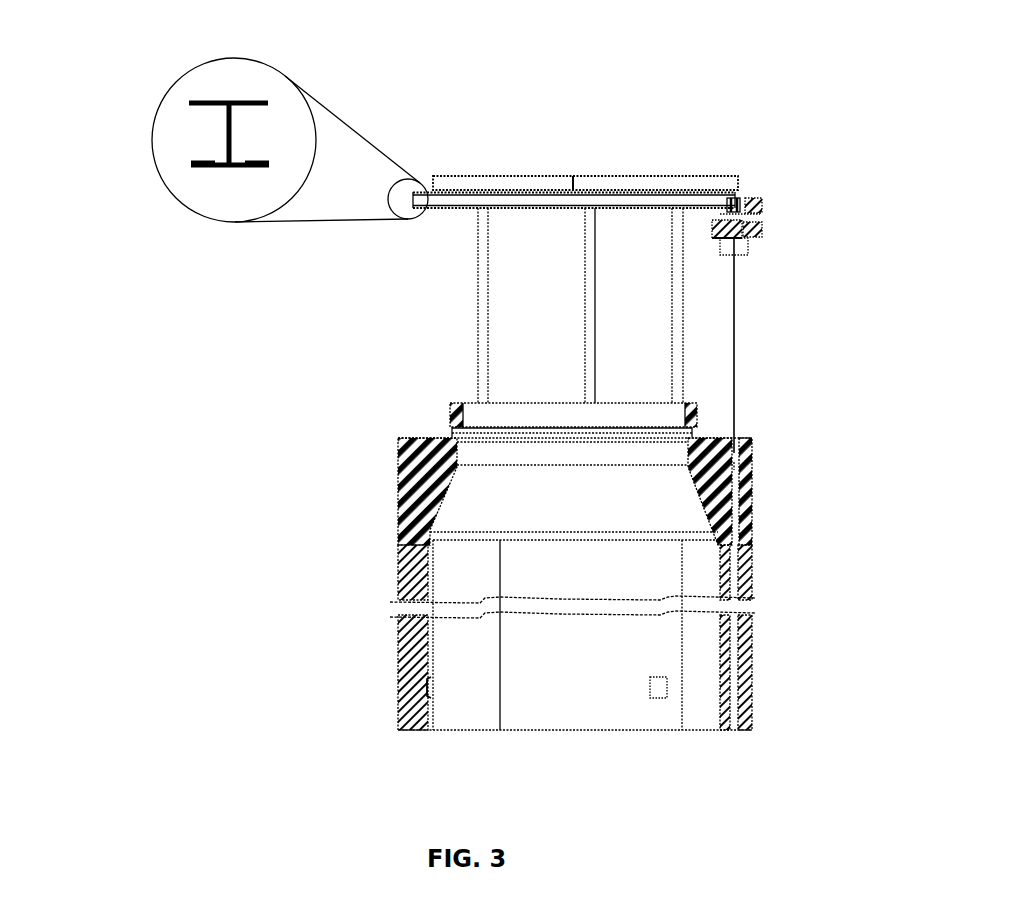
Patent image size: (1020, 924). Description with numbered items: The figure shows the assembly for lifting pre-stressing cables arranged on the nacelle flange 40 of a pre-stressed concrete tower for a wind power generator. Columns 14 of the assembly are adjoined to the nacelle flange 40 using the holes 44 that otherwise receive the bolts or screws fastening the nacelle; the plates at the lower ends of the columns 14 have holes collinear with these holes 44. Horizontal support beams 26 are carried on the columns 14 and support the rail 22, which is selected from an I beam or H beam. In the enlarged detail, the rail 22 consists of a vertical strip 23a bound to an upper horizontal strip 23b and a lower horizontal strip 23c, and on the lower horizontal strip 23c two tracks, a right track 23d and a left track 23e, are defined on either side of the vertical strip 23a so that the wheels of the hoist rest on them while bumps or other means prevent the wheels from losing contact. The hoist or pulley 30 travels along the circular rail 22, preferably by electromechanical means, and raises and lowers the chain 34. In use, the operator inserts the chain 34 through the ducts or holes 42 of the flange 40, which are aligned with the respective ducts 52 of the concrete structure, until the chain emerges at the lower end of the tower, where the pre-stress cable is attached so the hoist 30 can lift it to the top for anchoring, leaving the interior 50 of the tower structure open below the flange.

The columns 14 is at (487, 253).
The rail 22 is at (457, 198).
The vertical strip 23a is at (225, 133).
The upper horizontal strip 23b is at (208, 102).
The lower horizontal strip 23c is at (246, 168).
The right track 23d is at (207, 163).
The left track 23e is at (253, 162).
The horizontal support beams 26 is at (470, 183).
The hoist/pulley 30 is at (757, 198).
The chain 34 is at (735, 302).
The nacelle flange 40 is at (750, 452).
The ducts/holes for pre-stress cable 42 is at (735, 520).
The holes for fastening bolts of nacelle flange 44 is at (697, 402).
The interior chamber 50 is at (590, 662).
The ducts of the concrete structure 52 is at (748, 573).